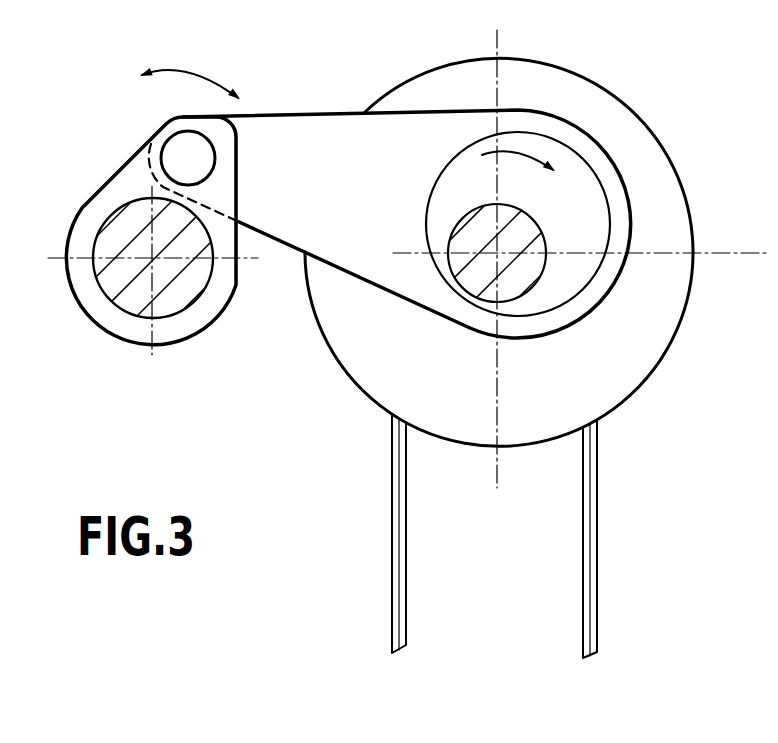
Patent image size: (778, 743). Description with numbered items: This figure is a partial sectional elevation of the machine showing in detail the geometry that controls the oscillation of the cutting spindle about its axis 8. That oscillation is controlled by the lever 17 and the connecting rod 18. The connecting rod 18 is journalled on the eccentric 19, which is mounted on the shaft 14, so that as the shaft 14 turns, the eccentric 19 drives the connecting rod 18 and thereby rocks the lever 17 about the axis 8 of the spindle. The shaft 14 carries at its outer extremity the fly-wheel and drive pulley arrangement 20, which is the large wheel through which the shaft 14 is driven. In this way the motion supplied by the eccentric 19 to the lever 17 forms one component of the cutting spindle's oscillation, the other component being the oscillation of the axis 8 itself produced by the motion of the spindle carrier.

The axis 8 is at (148, 260).
The shaft 14 is at (500, 258).
The lever 17 is at (126, 182).
The connecting rod 18 is at (282, 137).
The eccentric 19 is at (562, 155).
The fly-wheel and drive pulley arrangement 20 is at (545, 432).